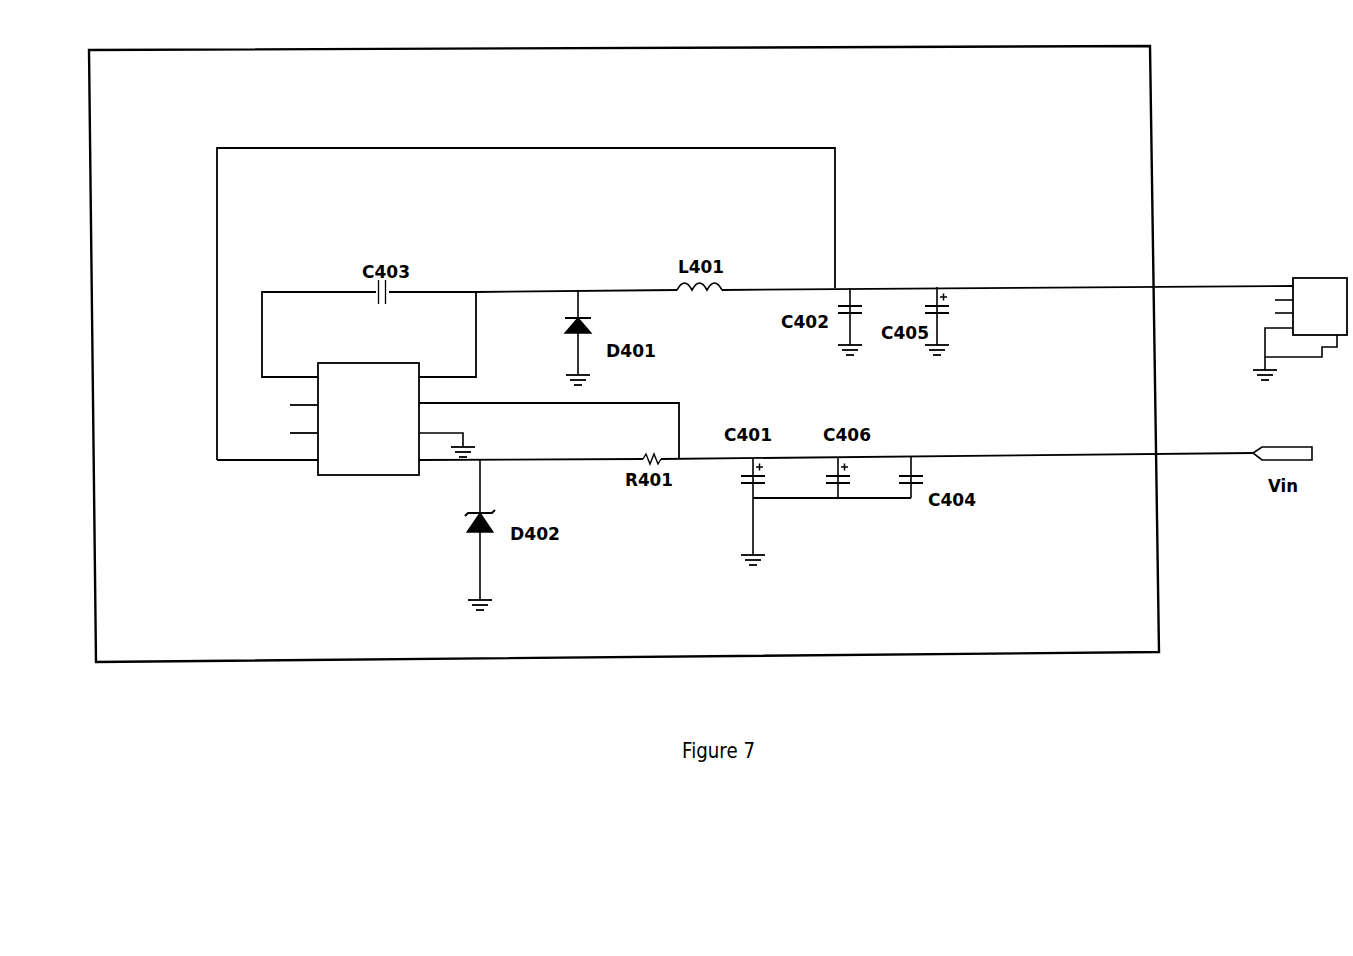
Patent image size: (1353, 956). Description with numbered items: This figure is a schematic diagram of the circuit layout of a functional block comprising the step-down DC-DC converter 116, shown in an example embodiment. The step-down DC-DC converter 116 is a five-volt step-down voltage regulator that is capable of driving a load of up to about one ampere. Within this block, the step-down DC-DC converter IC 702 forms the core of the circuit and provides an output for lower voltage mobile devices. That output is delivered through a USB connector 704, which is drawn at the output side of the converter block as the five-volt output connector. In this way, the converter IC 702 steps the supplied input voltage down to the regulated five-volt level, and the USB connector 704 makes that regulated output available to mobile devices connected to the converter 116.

The step-down DC-DC converter 116 is at (1163, 596).
The step-down DC-DC converter IC 702 is at (349, 384).
The USB connector 704 is at (1326, 276).